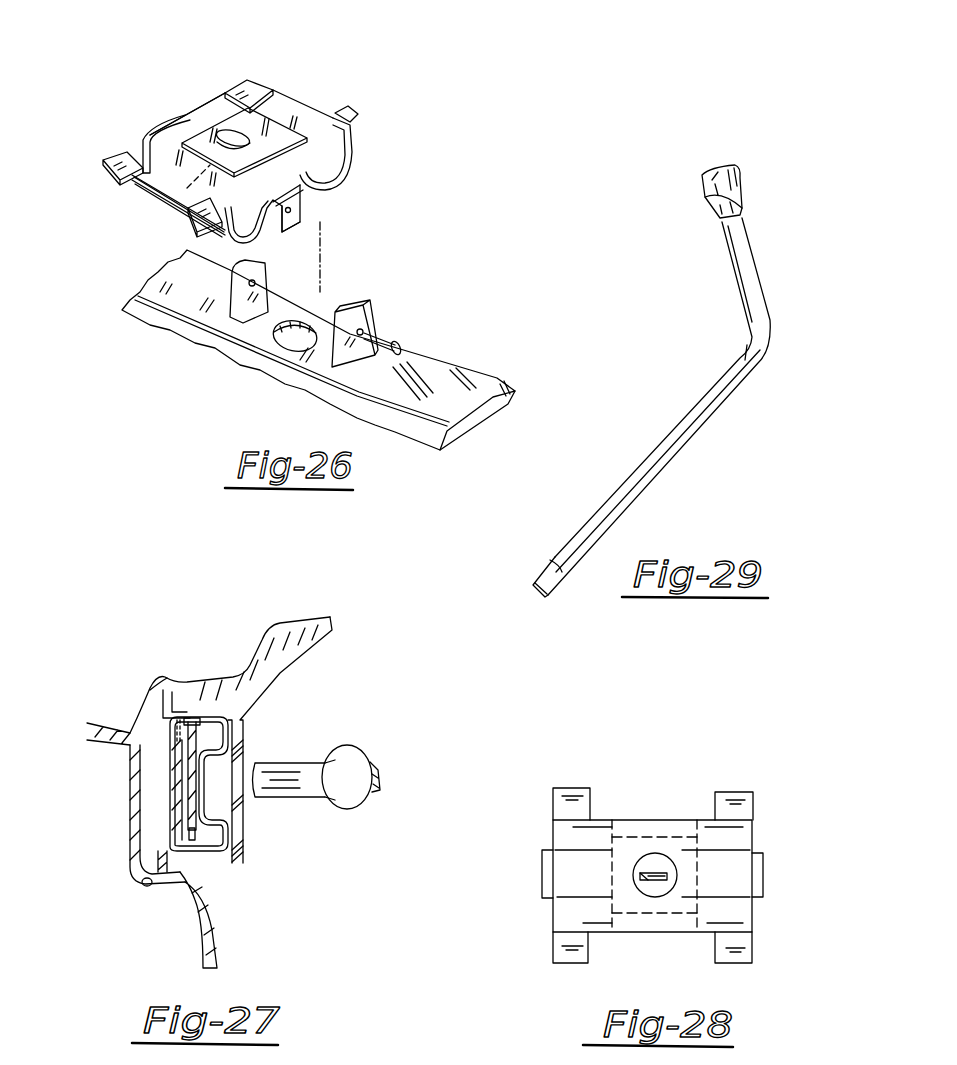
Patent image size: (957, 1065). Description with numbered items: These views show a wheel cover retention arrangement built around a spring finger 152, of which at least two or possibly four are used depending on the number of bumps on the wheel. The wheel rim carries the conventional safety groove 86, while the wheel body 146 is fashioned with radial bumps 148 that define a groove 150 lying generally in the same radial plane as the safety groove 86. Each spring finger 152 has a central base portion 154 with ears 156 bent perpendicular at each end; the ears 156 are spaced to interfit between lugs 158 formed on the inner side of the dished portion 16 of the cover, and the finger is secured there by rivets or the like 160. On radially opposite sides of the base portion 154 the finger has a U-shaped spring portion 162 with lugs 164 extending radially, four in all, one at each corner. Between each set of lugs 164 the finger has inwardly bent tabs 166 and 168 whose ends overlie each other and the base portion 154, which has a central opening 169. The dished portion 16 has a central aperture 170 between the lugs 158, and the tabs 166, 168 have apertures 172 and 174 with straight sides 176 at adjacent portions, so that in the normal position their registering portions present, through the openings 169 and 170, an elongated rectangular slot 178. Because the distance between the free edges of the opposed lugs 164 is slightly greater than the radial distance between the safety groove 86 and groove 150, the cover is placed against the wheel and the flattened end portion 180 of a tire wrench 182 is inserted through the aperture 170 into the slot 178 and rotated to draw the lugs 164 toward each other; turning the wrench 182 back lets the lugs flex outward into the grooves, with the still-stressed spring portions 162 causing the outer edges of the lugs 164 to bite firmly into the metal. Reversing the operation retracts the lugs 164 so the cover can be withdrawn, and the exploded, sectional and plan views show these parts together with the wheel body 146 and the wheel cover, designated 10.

In FIG. 26, the housing body 10 is at (412, 446).
In FIG. 27, the housing body 10 is at (322, 676).
In FIG. 26, the dished portion 16 is at (472, 413).
In FIG. 27, the safety groove 86 is at (158, 682).
In FIG. 27, the wheel body 146 is at (126, 867).
In FIG. 27, the radial bumps 148 is at (207, 898).
In FIG. 27, the groove 150 is at (150, 884).
In FIG. 26, the spring finger 152 is at (239, 145).
In FIG. 26, the central base portion 154 is at (187, 120).
In FIG. 26, the ears 156 is at (143, 150).
In FIG. 28, the ears 156 is at (542, 873).
In FIG. 26, the lugs 158 is at (232, 293).
In FIG. 26, the rivets 160 is at (400, 345).
In FIG. 26, the U-shaped spring portion 162 is at (327, 192).
In FIG. 27, the U-shaped spring portion 162 is at (199, 784).
In FIG. 28, the U-shaped spring portion 162 is at (752, 840).
In FIG. 26, the lugs 164 is at (253, 80).
In FIG. 27, the lugs 164 is at (173, 700).
In FIG. 28, the lugs 164 is at (565, 787).
In FIG. 26, the inwardly bent tab 166 is at (163, 195).
In FIG. 26, the inwardly bent tab 168 is at (305, 188).
In FIG. 27, the central opening 169 is at (220, 768).
In FIG. 28, the central opening 169 is at (673, 875).
In FIG. 27, the central aperture 170 is at (240, 800).
In FIG. 26, the aperture 172 is at (250, 140).
In FIG. 27, the aperture 172 is at (180, 777).
In FIG. 28, the aperture 172 is at (670, 857).
In FIG. 26, the aperture 174 is at (182, 212).
In FIG. 27, the aperture 174 is at (193, 788).
In FIG. 28, the aperture 174 is at (662, 887).
In FIG. 26, the straight sides 176 is at (240, 133).
In FIG. 28, the straight sides 176 is at (645, 873).
In FIG. 28, the elongated rectangular slot 178 is at (652, 883).
In FIG. 29, the flattened end portion 180 is at (548, 596).
In FIG. 29, the tire wrench 182 is at (660, 452).